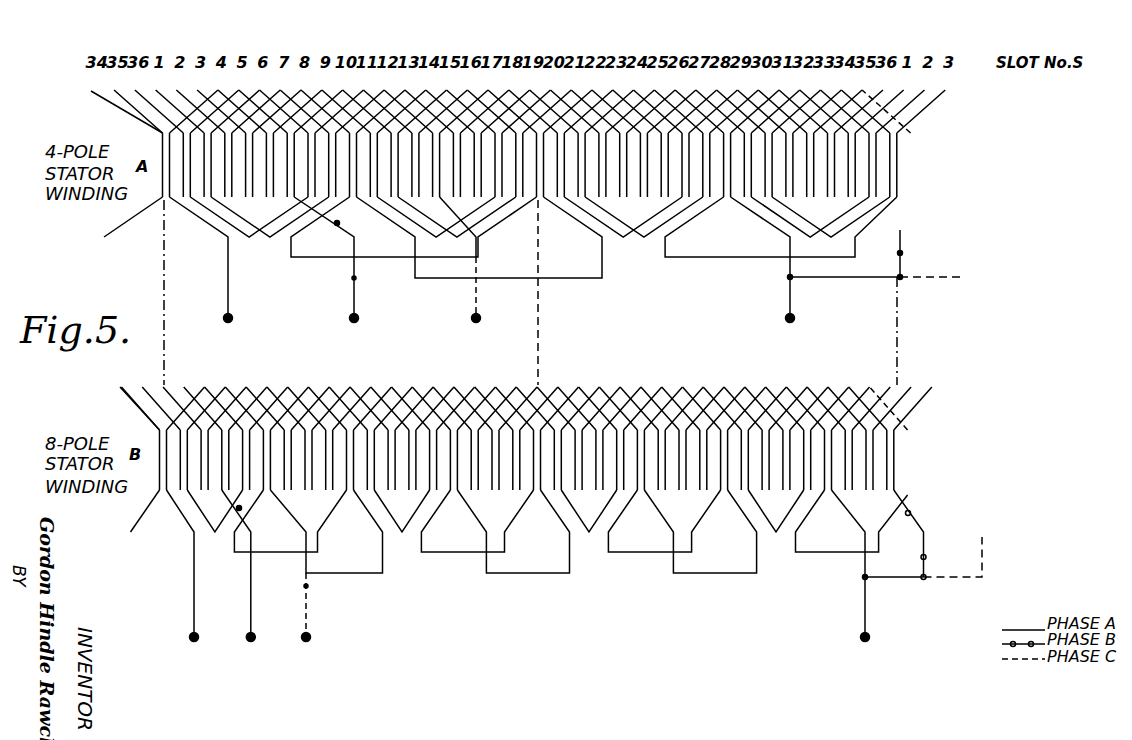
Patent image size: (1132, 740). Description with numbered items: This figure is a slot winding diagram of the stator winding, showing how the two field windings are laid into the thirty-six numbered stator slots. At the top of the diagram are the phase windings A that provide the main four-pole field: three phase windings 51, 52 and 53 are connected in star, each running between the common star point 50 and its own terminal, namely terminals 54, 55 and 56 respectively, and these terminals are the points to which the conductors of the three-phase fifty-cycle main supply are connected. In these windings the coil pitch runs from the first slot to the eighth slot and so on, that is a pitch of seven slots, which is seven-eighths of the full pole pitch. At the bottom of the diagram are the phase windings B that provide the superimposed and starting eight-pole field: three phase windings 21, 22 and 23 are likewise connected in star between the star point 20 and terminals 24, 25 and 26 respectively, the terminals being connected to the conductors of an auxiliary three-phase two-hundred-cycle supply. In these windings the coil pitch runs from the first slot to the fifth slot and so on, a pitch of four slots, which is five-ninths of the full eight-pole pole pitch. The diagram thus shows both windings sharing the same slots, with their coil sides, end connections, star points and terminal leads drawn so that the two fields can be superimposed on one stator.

The star point 20 is at (878, 582).
The phase winding 21 is at (549, 574).
The phase winding 22 is at (910, 514).
The phase winding 23 is at (297, 516).
The terminal 24 is at (184, 582).
The terminal 25 is at (242, 582).
The terminal 26 is at (313, 623).
The star point 50 is at (795, 317).
The phase winding 51 is at (569, 280).
The phase winding 52 is at (880, 215).
The phase winding 53 is at (435, 215).
The terminal 54 is at (233, 317).
The terminal 55 is at (359, 317).
The terminal 56 is at (481, 317).